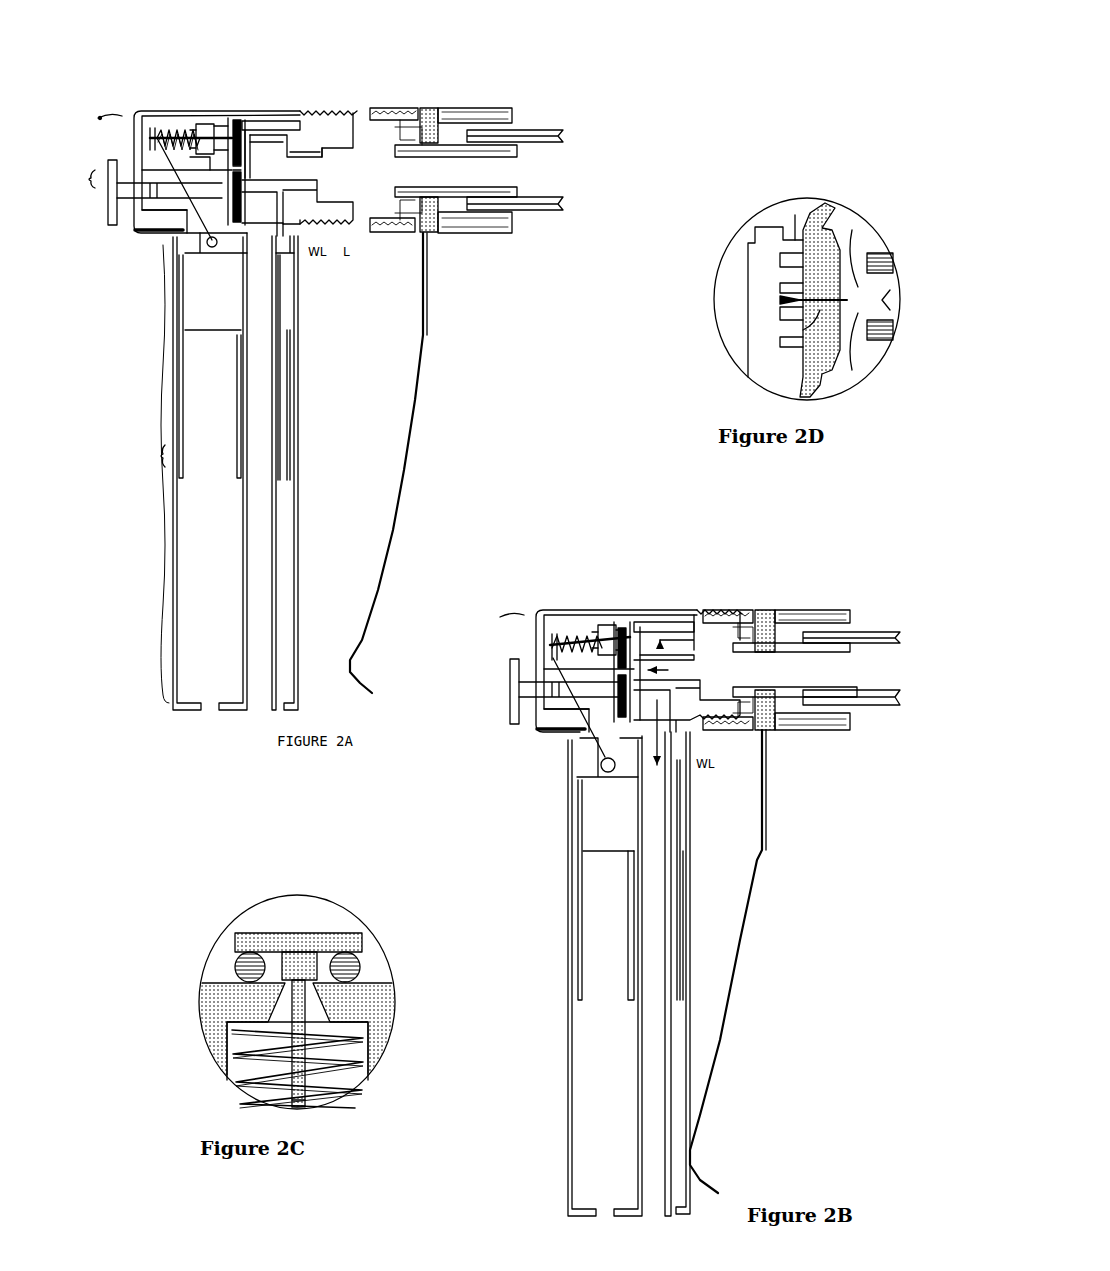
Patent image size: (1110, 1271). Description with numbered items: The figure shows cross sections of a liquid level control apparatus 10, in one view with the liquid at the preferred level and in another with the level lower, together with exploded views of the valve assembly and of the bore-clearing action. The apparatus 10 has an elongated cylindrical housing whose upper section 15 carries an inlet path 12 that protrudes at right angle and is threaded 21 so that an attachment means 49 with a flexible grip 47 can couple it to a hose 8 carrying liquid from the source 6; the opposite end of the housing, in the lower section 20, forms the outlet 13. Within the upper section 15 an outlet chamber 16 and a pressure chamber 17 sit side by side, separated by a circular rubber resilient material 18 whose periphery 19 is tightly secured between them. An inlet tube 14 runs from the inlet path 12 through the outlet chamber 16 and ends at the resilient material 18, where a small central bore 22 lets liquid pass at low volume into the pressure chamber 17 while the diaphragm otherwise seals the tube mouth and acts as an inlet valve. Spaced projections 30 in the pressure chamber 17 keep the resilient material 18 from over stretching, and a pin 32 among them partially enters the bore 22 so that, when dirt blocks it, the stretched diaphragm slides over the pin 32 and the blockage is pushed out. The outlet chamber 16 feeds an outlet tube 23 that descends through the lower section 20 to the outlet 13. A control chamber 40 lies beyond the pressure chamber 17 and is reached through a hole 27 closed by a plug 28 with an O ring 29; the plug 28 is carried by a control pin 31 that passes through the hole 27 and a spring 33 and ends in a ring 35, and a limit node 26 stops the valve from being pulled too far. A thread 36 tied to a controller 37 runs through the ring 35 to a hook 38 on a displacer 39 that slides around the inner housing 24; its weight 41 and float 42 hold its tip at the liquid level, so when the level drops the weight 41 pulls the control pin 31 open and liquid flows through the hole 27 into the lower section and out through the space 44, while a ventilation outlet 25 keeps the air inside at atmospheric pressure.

In FIG. 2A, the source 6 is at (558, 170).
In FIG. 2A, the hose 8 is at (562, 137).
In FIG. 2A, the apparatus 10 is at (113, 706).
In FIG. 2A, the inlet path 12 is at (338, 173).
In FIG. 2A, the outlet 13 is at (258, 707).
In FIG. 2A, the inlet tube 14 is at (332, 117).
In FIG. 2D, the inlet tube 14 is at (862, 260).
In FIG. 2A, the upper section 15 is at (80, 178).
In FIG. 2A, the outlet chamber 16 is at (278, 113).
In FIG. 2D, the outlet chamber 16 is at (850, 225).
In FIG. 2B, the outlet chamber 16 is at (663, 645).
In FIG. 2A, the pressure chamber 17 is at (233, 117).
In FIG. 2D, the pressure chamber 17 is at (795, 215).
In FIG. 2A, the resilient material 18 is at (252, 113).
In FIG. 2D, the resilient material 18 is at (835, 200).
In FIG. 2B, the resilient material 18 is at (622, 632).
In FIG. 2A, the periphery 19 is at (243, 215).
In FIG. 2B, the periphery 19 is at (630, 625).
In FIG. 2A, the lower section 20 is at (183, 471).
In FIG. 2A, the thread 21 is at (345, 120).
In FIG. 2A, the bore 22 is at (282, 172).
In FIG. 2D, the bore 22 is at (800, 330).
In FIG. 2A, the outlet tube 23 is at (258, 373).
In FIG. 2B, the outlet tube 23 is at (677, 974).
In FIG. 2A, the inner housing 24 is at (200, 250).
In FIG. 2A, the ventilation outlet 25 is at (167, 243).
In FIG. 2B, the ventilation outlet 25 is at (578, 742).
In FIG. 2A, the limit node 26 is at (137, 158).
In FIG. 2A, the hole 27 is at (193, 110).
In FIG. 2C, the hole 27 is at (283, 1010).
In FIG. 2A, the plug 28 is at (208, 110).
In FIG. 2C, the plug 28 is at (283, 948).
In FIG. 2C, the O ring 29 is at (235, 963).
In FIG. 2A, the projections 30 is at (222, 117).
In FIG. 2D, the projections 30 is at (787, 238).
In FIG. 2A, the control pin 31 is at (155, 117).
In FIG. 2C, the control pin 31 is at (300, 1105).
In FIG. 2B, the control pin 31 is at (577, 643).
In FIG. 2A, the pin 32 is at (222, 170).
In FIG. 2D, the pin 32 is at (790, 300).
In FIG. 2A, the spring 33 is at (138, 110).
In FIG. 2C, the spring 33 is at (352, 1070).
In FIG. 2A, the ring 35 is at (100, 118).
In FIG. 2B, the ring 35 is at (550, 645).
In FIG. 2A, the thread 36 is at (130, 228).
In FIG. 2B, the thread 36 is at (572, 728).
In FIG. 2A, the controller 37 is at (108, 163).
In FIG. 2B, the controller 37 is at (510, 670).
In FIG. 2A, the hook 38 is at (168, 247).
In FIG. 2A, the displacer 39 is at (178, 385).
In FIG. 2B, the displacer 39 is at (577, 826).
In FIG. 2A, the control chamber 40 is at (102, 232).
In FIG. 2A, the weight 41 is at (200, 313).
In FIG. 2A, the float 42 is at (210, 420).
In FIG. 2A, the space 44 is at (238, 457).
In FIG. 2A, the flexible grip 47 is at (392, 523).
In FIG. 2B, the flexible grip 47 is at (757, 918).
In FIG. 2A, the attachment means 49 is at (488, 106).